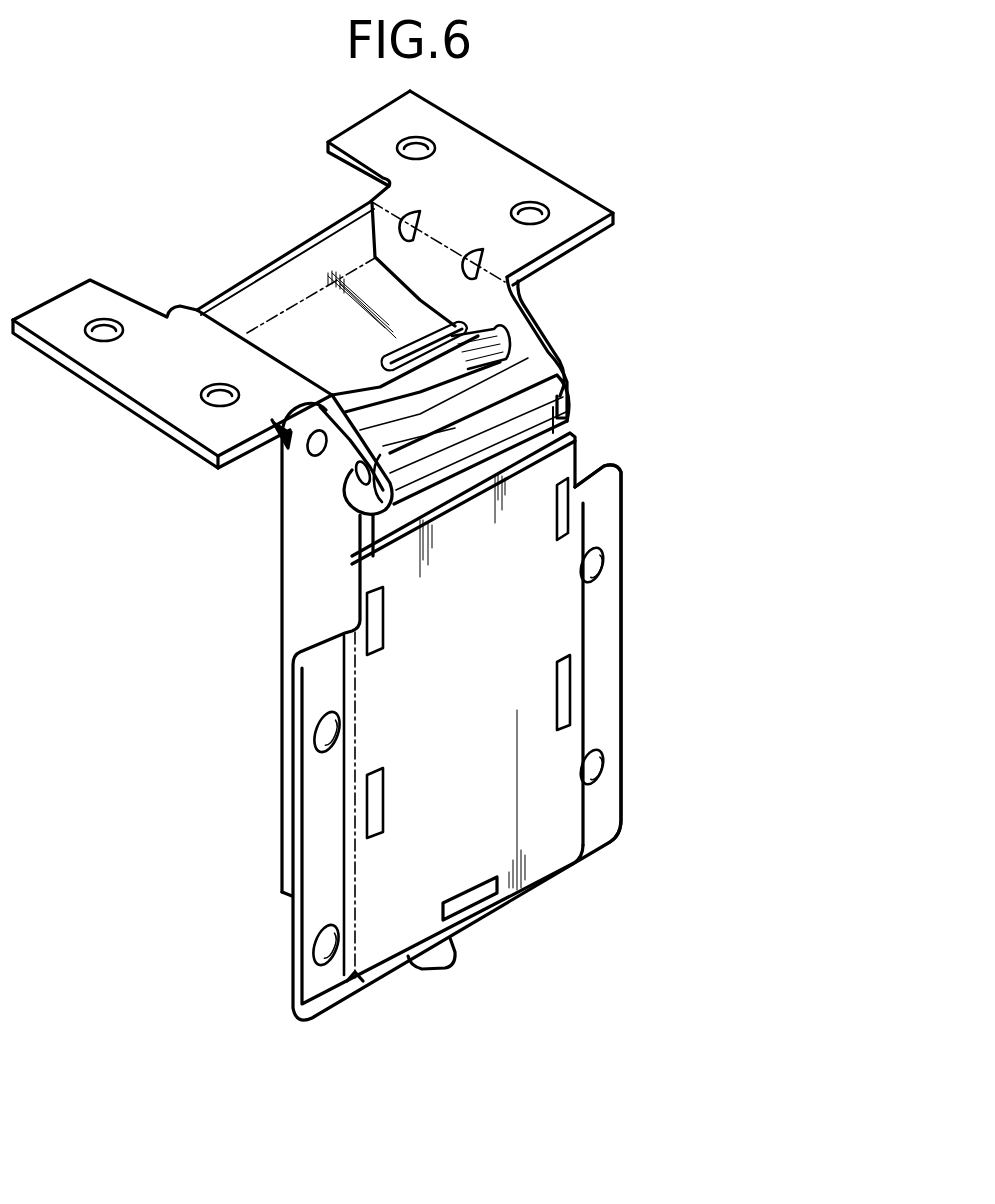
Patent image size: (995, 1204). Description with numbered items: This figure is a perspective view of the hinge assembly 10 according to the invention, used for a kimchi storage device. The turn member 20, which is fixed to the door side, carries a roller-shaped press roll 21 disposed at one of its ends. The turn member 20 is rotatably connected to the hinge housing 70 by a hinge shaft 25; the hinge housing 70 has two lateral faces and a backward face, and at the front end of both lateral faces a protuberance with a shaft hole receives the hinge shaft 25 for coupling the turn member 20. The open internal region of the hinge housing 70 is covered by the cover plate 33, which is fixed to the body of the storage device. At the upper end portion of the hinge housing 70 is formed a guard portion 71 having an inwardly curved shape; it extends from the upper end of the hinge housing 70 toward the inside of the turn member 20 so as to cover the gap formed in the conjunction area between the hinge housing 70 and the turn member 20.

The hinge assembly 10 is at (704, 416).
The turn member 20 is at (555, 132).
The press roll 21 is at (563, 384).
The hinge shaft 25 is at (522, 314).
The cover plate 33 is at (615, 658).
The hinge housing 70 is at (283, 587).
The guard portion 71 is at (383, 348).